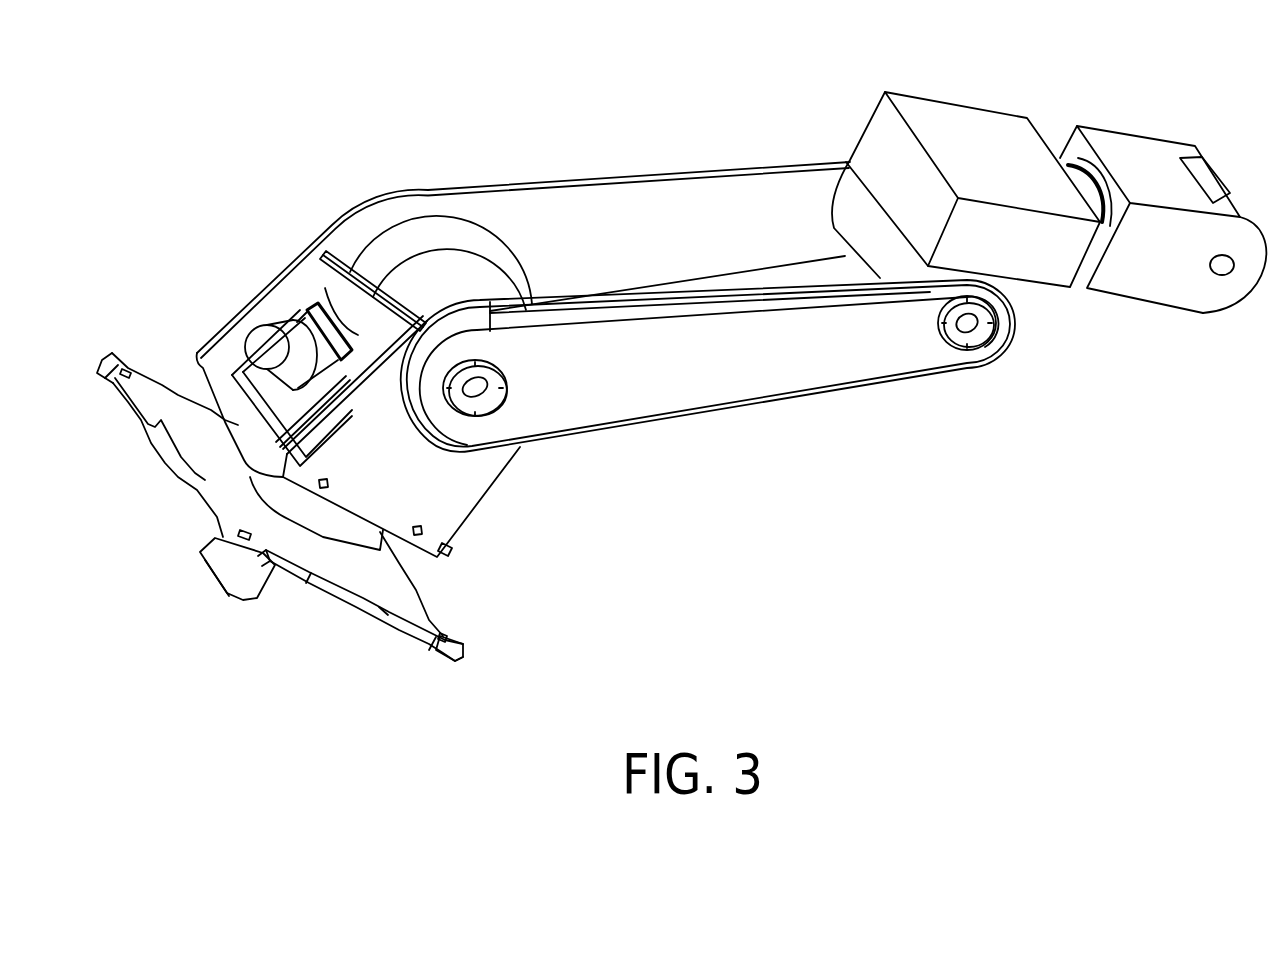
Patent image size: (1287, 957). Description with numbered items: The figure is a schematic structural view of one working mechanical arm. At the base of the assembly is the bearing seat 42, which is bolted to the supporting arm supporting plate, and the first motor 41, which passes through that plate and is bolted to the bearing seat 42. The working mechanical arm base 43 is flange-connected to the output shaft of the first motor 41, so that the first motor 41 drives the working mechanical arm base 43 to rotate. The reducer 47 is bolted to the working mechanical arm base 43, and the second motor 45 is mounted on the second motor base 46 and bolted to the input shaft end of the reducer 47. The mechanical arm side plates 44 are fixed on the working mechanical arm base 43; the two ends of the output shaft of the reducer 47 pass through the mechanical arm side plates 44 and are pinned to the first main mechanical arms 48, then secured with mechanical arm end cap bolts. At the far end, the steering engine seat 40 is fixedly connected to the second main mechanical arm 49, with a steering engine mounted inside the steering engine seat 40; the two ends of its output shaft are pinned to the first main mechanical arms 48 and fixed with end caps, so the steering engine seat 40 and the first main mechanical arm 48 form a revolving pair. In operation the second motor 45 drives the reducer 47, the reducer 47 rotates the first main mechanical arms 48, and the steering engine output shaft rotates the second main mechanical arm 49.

The steering engine seat 40 is at (858, 212).
The first motor 41 is at (243, 580).
The bearing seat 42 is at (363, 572).
The working mechanical arm base 43 is at (222, 370).
The mechanical arm side plates 44 is at (372, 224).
The second motor 45 is at (272, 350).
The second motor base 46 is at (345, 378).
The reducer 47 is at (447, 285).
The first main mechanical arms 48 is at (643, 377).
The second main mechanical arm 49 is at (1027, 162).